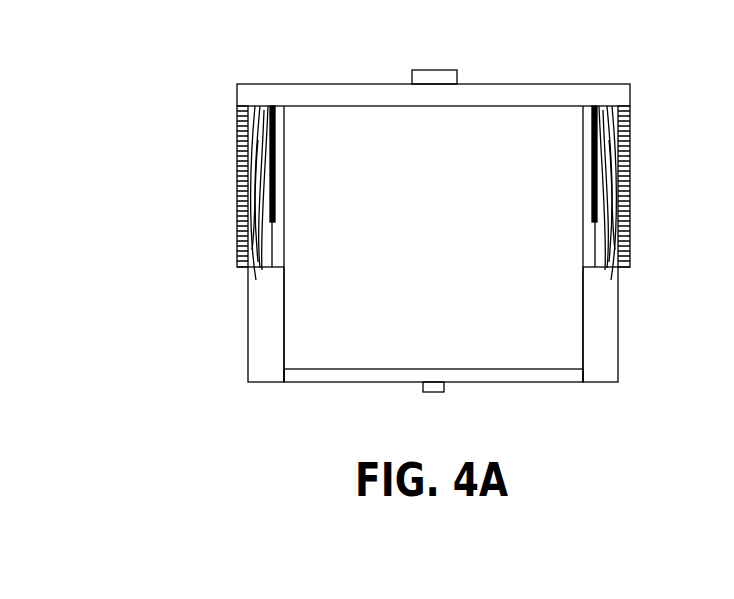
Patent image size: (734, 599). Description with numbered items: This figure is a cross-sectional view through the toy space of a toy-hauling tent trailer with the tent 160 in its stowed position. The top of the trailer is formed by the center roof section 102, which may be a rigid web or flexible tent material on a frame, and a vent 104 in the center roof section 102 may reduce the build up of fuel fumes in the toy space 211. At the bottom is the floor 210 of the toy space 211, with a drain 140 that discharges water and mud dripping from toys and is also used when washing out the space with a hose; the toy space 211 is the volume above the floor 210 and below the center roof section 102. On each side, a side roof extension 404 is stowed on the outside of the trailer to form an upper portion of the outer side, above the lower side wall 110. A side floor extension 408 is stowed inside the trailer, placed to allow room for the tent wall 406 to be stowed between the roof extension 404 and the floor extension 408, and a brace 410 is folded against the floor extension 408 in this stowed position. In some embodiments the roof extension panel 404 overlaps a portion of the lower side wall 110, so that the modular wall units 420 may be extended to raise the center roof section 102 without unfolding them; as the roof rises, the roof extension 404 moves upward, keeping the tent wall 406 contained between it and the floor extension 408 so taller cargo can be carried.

The center roof section 102 is at (524, 84).
The vent 104 is at (435, 70).
The lower side wall 110 is at (248, 320).
The drain 140 is at (433, 393).
The tent 160 is at (663, 246).
The floor 210 is at (380, 369).
The toy space 211 is at (449, 244).
The side roof extension 404 is at (237, 130).
The tent wall 406 is at (255, 268).
The side floor extension 408 is at (285, 238).
The brace 410 is at (275, 172).
The modular wall unit 420 is at (206, 179).